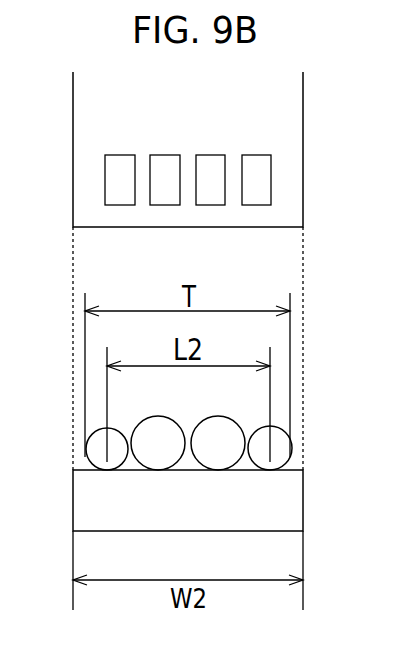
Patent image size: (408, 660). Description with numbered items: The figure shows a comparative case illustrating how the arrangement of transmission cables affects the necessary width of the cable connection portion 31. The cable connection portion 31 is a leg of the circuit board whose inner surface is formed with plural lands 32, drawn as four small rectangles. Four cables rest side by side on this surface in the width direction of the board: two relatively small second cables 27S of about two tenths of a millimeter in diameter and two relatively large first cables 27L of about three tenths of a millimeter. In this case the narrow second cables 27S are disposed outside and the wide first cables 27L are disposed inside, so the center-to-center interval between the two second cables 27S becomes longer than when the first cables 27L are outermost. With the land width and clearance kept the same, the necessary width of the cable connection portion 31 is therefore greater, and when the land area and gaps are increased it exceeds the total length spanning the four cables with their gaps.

The cable connection portion 31 is at (280, 116).
The lands 32 is at (262, 178).
The second cables 27S is at (283, 452).
The first cables 27L is at (220, 453).